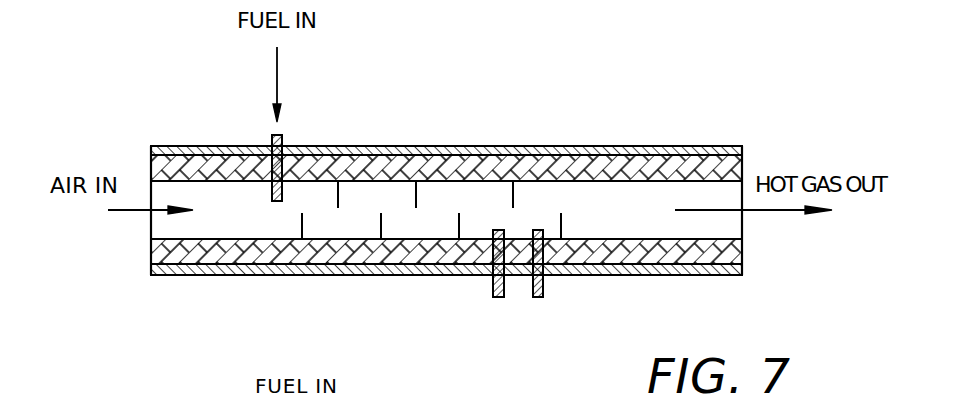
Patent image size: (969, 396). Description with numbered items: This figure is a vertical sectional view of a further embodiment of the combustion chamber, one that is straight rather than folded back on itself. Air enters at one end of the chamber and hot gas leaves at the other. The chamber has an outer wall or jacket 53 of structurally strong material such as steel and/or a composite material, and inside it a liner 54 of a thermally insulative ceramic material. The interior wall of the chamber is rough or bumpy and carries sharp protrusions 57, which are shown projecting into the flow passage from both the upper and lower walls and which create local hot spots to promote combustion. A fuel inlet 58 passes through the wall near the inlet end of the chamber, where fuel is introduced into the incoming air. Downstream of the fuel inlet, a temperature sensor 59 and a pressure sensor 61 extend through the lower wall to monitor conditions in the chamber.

The outer wall or jacket 53 is at (528, 150).
The liner 54 is at (645, 160).
The sharp protrusions 57 is at (338, 195).
The fuel inlet 58 is at (272, 136).
The temperature sensor 59 is at (493, 283).
The pressure sensor 61 is at (544, 283).